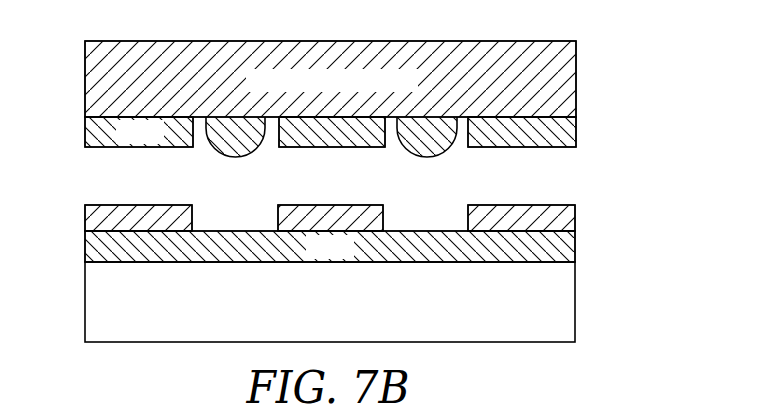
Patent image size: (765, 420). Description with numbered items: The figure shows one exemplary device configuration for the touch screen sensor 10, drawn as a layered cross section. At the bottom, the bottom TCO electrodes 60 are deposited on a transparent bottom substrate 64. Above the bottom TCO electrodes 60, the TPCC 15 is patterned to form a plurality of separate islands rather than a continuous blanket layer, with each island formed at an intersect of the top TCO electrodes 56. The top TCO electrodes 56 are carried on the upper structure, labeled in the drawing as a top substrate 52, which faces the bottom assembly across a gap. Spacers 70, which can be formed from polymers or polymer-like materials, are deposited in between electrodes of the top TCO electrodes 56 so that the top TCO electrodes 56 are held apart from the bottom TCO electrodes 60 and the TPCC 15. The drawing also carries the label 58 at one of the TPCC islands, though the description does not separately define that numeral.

The sensor 10 is at (652, 38).
The top substrate 52 is at (562, 41).
The top TCO electrodes 56 is at (85, 133).
The spacers 70 is at (221, 151).
The bottom electrode segment 58 is at (370, 205).
The TPCC 15 is at (330, 206).
The bottom TCO electrodes 60 is at (85, 248).
The bottom substrate 64 is at (575, 297).